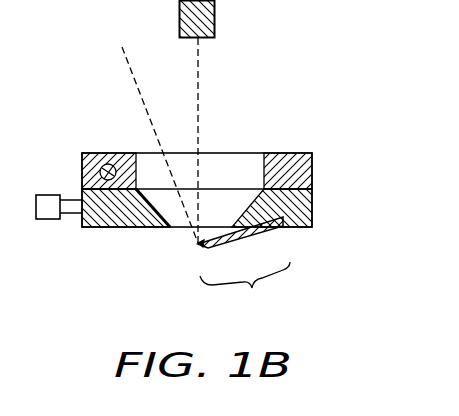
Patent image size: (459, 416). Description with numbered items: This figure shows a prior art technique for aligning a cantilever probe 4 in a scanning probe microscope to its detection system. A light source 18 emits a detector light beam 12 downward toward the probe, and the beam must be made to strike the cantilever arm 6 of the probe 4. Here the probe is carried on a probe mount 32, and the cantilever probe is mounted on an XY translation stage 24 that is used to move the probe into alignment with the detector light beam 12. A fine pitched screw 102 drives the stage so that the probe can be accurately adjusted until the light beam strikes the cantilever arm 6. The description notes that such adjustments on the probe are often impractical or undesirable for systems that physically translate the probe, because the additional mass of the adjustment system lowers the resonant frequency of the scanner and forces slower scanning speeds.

The light source 18 is at (215, 10).
The light beam 12 is at (200, 92).
The XY translation stage 24 is at (82, 170).
The fine pitched screw 102 is at (45, 219).
The probe mount 32 is at (284, 228).
The cantilever arm 6 is at (201, 246).
The cantilever probe 4 is at (245, 291).